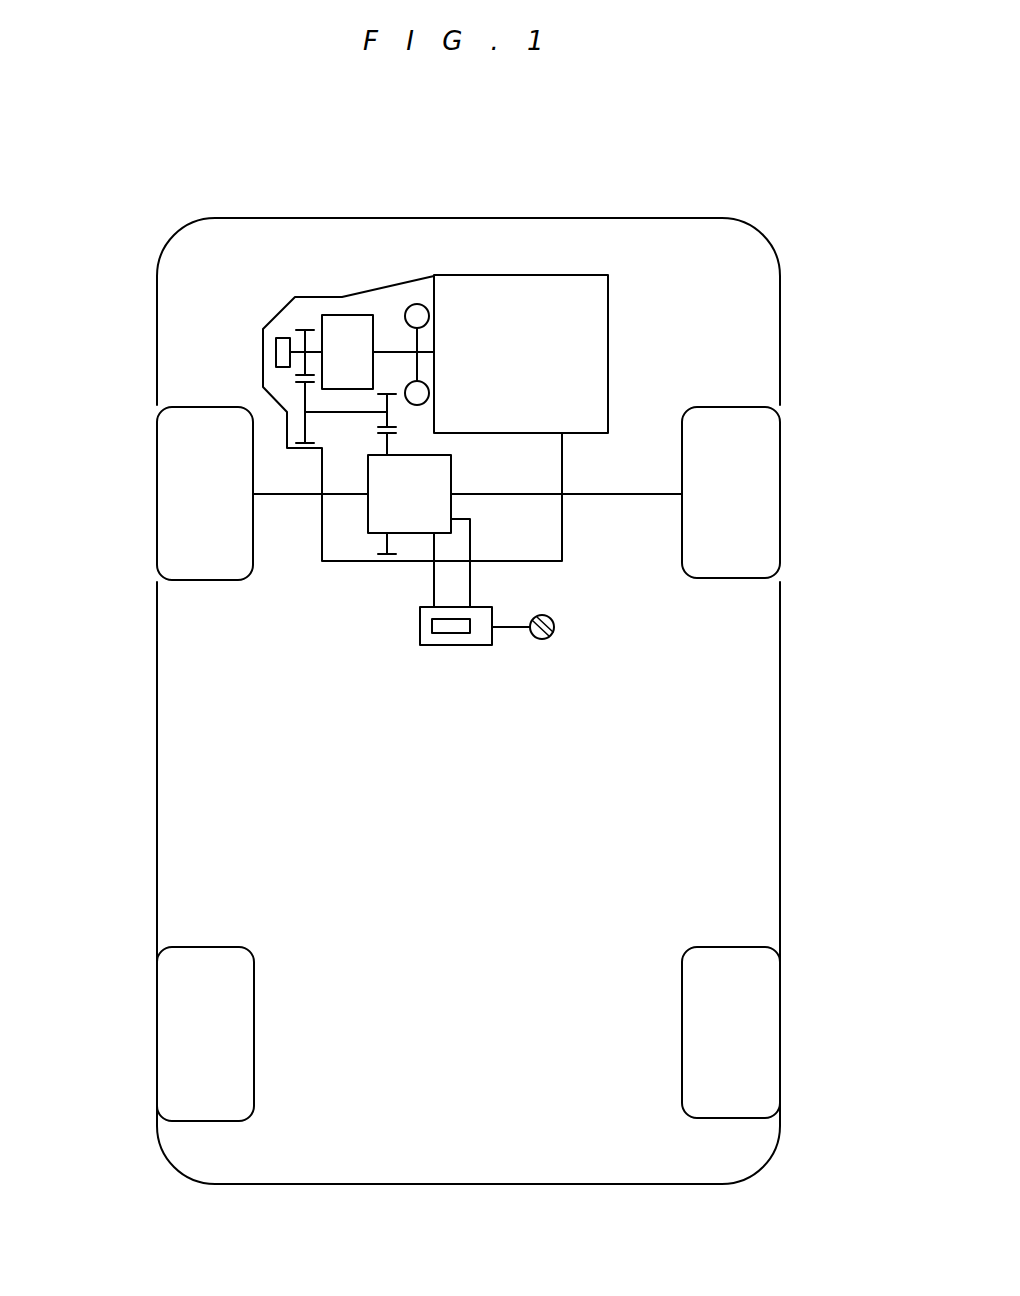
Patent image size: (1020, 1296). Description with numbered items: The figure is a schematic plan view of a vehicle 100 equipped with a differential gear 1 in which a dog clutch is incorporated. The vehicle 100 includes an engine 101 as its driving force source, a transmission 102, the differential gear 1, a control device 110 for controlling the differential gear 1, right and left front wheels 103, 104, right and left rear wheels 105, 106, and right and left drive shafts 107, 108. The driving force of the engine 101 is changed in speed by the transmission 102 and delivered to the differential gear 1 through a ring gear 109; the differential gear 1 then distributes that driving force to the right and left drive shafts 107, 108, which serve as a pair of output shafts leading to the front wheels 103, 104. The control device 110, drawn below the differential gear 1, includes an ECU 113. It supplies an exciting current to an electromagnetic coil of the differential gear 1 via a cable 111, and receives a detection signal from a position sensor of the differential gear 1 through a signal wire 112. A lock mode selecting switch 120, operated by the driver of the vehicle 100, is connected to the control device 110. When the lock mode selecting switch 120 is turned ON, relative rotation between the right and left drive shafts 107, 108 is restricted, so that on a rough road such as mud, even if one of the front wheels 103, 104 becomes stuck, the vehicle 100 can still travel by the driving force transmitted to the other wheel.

The differential gear 1 is at (362, 534).
The vehicle 100 is at (673, 218).
The engine 101 is at (522, 275).
The transmission 102 is at (338, 313).
The front wheel 103 is at (157, 432).
The front wheel 104 is at (780, 433).
The rear wheel 105 is at (157, 992).
The rear wheel 106 is at (780, 992).
The drive shaft 107 is at (292, 495).
The drive shaft 108 is at (615, 495).
The ring gear 109 is at (386, 558).
The control device 110 is at (465, 647).
The cable 111 is at (432, 570).
The signal wire 112 is at (472, 584).
The ECU 113 is at (445, 632).
The lock mode selecting switch 120 is at (555, 617).